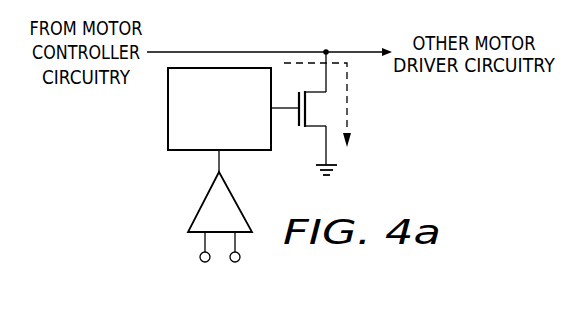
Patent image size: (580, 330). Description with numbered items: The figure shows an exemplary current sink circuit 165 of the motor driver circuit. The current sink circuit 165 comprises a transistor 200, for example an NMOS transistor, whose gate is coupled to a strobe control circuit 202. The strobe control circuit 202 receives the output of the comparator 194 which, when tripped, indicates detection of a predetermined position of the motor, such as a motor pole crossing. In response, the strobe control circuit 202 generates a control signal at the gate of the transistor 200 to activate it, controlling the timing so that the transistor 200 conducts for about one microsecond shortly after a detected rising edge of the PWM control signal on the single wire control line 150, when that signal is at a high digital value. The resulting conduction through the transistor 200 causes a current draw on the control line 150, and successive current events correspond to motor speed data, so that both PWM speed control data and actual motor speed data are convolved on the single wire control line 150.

The single wire control line 150 is at (280, 52).
The current sink circuit 165 is at (70, 141).
The strobe control circuit 202 is at (168, 108).
The transistor 200 is at (373, 115).
The comparator 194 is at (203, 201).